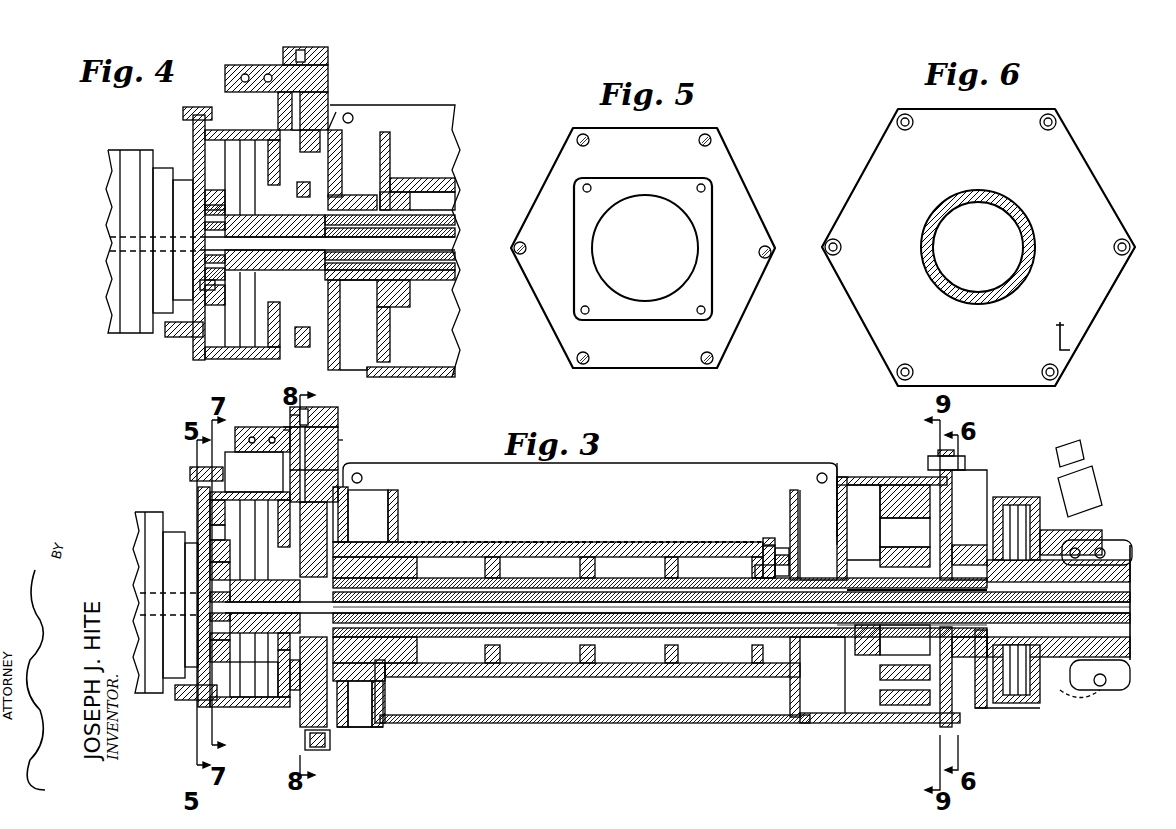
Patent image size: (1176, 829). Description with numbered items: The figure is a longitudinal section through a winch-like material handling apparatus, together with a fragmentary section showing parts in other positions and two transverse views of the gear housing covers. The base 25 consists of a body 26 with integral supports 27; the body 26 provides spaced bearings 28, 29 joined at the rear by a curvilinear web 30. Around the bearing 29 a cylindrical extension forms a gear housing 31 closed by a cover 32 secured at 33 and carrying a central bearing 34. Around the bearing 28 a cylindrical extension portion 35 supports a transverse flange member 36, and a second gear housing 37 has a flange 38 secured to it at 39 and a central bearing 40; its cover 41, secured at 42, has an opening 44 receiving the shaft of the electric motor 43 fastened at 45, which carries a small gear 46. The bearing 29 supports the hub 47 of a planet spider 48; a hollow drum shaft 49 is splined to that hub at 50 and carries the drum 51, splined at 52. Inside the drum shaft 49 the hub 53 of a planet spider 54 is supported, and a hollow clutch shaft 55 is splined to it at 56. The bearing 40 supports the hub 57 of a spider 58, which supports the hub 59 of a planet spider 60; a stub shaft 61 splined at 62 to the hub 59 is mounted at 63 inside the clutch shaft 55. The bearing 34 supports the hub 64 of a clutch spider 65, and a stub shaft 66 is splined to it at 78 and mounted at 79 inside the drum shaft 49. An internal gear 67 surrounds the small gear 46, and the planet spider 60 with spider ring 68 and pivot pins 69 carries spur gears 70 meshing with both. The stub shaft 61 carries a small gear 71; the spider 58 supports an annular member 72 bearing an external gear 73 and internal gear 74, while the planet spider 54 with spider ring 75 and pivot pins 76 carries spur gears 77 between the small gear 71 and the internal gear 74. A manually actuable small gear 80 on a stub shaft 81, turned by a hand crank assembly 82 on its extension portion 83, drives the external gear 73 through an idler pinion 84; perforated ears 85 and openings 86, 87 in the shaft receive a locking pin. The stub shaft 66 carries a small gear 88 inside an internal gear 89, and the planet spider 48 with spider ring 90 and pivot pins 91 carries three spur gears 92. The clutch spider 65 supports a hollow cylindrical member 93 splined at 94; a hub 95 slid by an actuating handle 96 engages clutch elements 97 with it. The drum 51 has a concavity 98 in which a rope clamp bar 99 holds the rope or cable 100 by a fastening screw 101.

In FIG. 4, the base 25 is at (415, 120).
In FIG. 3, the base 25 is at (590, 475).
In FIG. 4, the body 26 is at (445, 370).
In FIG. 3, the body 26 is at (620, 475).
In FIG. 4, the supports 27 is at (360, 345).
In FIG. 3, the supports 27 is at (340, 730).
In FIG. 3, the bearing 28 is at (395, 677).
In FIG. 3, the bearing 29 is at (798, 717).
In FIG. 3, the curvilinear web 30 is at (540, 723).
In FIG. 3, the gear housing 31 is at (887, 480).
In FIG. 6, the cover 32 is at (1038, 172).
In FIG. 3, the cover 32 is at (1010, 560).
In FIG. 6, the securing location 33 is at (897, 375).
In FIG. 3, the securing location 33 is at (948, 470).
In FIG. 6, the bearing 34 is at (1025, 255).
In FIG. 3, the bearing 34 is at (970, 553).
In FIG. 3, the cylindrical extension portion 35 is at (350, 500).
In FIG. 3, the flange member 36 is at (345, 440).
In FIG. 4, the second gear housing 37 is at (235, 148).
In FIG. 3, the second gear housing 37 is at (205, 500).
In FIG. 4, the flange 38 is at (283, 62).
In FIG. 3, the flange 38 is at (280, 405).
In FIG. 4, the securing location 39 is at (328, 55).
In FIG. 3, the securing location 39 is at (322, 755).
In FIG. 4, the bearing 40 is at (250, 200).
In FIG. 3, the bearing 40 is at (245, 700).
In FIG. 4, the cover 41 is at (193, 195).
In FIG. 5, the cover 41 is at (718, 175).
In FIG. 4, the securing location 42 is at (197, 122).
In FIG. 3, the securing location 42 is at (198, 492).
In FIG. 4, the electric motor 43 is at (130, 175).
In FIG. 3, the electric motor 43 is at (150, 530).
In FIG. 5, the opening 44 is at (620, 252).
In FIG. 3, the opening 44 is at (190, 600).
In FIG. 4, the securing location 45 is at (185, 325).
In FIG. 3, the securing location 45 is at (192, 700).
In FIG. 4, the small gear 46 is at (215, 250).
In FIG. 3, the small gear 46 is at (205, 595).
In FIG. 3, the hub 47 is at (808, 570).
In FIG. 3, the planet spider 48 is at (860, 723).
In FIG. 3, the drum shaft 49 is at (560, 578).
In FIG. 3, the spline 50 is at (850, 560).
In FIG. 4, the drum 51 is at (420, 178).
In FIG. 3, the drum 51 is at (622, 542).
In FIG. 3, the spline 52 is at (755, 572).
In FIG. 3, the hub 53 is at (380, 555).
In FIG. 3, the planet spider 54 is at (385, 680).
In FIG. 4, the hollow clutch shaft 55 is at (440, 215).
In FIG. 3, the hollow clutch shaft 55 is at (630, 623).
In FIG. 3, the spline 56 is at (267, 606).
In FIG. 3, the hub 57 is at (225, 605).
In FIG. 3, the spider 58 is at (292, 690).
In FIG. 4, the hub 59 is at (215, 228).
In FIG. 4, the planet spider 60 is at (215, 210).
In FIG. 4, the stub shaft 61 is at (327, 242).
In FIG. 4, the spline 62 is at (205, 262).
In FIG. 3, the bearing mounting 63 is at (470, 613).
In FIG. 3, the hub 64 is at (1000, 703).
In FIG. 3, the clutch spider 65 is at (1015, 520).
In FIG. 3, the stub shaft 66 is at (892, 645).
In FIG. 3, the internal gear 67 is at (205, 512).
In FIG. 4, the spider ring 68 is at (200, 285).
In FIG. 3, the spider ring 68 is at (210, 636).
In FIG. 3, the pivot pins 69 is at (225, 555).
In FIG. 3, the spur gears 70 is at (205, 520).
In FIG. 3, the small gear 71 is at (370, 550).
In FIG. 4, the annular member 72 is at (335, 150).
In FIG. 3, the annular member 72 is at (335, 730).
In FIG. 4, the external gear 73 is at (305, 135).
In FIG. 3, the external gear 73 is at (396, 510).
In FIG. 4, the internal gear 74 is at (300, 168).
In FIG. 3, the internal gear 74 is at (345, 684).
In FIG. 4, the spider ring 75 is at (300, 330).
In FIG. 3, the pivot pins 76 is at (345, 540).
In FIG. 3, the spur gears 77 is at (285, 680).
In FIG. 3, the spline 78 is at (1030, 695).
In FIG. 3, the bearing mounting 79 is at (835, 627).
In FIG. 4, the small gear 80 is at (300, 95).
In FIG. 3, the small gear 80 is at (337, 412).
In FIG. 3, the stub shaft 81 is at (338, 445).
In FIG. 3, the hand crank assembly 82 is at (313, 614).
In FIG. 3, the extension portion 83 is at (232, 420).
In FIG. 3, the idler pinion 84 is at (345, 470).
In FIG. 3, the perforated ears 85 is at (262, 425).
In FIG. 4, the opening 86 is at (238, 75).
In FIG. 3, the opening 87 is at (257, 459).
In FIG. 3, the small gear 88 is at (840, 592).
In FIG. 3, the internal gear 89 is at (905, 490).
In FIG. 3, the spider ring 90 is at (895, 682).
In FIG. 3, the pivot pins 91 is at (905, 534).
In FIG. 3, the spur gears 92 is at (960, 520).
In FIG. 3, the hollow cylindrical member 93 is at (1045, 525).
In FIG. 3, the spline 94 is at (1040, 685).
In FIG. 3, the hub 95 is at (1120, 658).
In FIG. 3, the actuating handle 96 is at (1078, 465).
In FIG. 3, the clutch elements 97 is at (1060, 528).
In FIG. 3, the concavity 98 is at (765, 545).
In FIG. 3, the rope clamp bar 99 is at (792, 530).
In FIG. 3, the rope or cable 100 is at (778, 548).
In FIG. 3, the fastening screw 101 is at (777, 555).